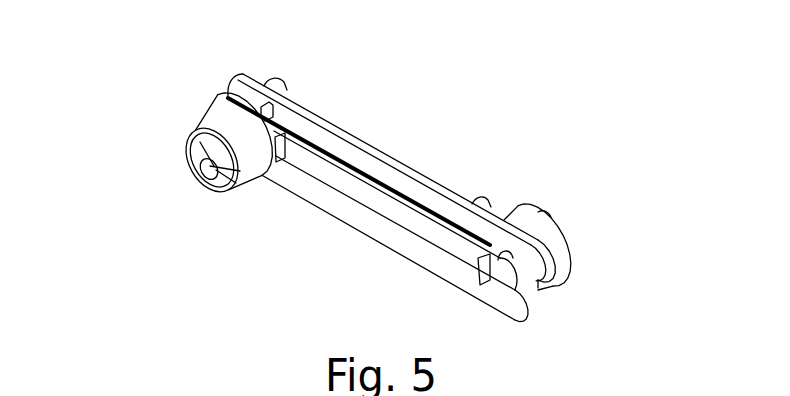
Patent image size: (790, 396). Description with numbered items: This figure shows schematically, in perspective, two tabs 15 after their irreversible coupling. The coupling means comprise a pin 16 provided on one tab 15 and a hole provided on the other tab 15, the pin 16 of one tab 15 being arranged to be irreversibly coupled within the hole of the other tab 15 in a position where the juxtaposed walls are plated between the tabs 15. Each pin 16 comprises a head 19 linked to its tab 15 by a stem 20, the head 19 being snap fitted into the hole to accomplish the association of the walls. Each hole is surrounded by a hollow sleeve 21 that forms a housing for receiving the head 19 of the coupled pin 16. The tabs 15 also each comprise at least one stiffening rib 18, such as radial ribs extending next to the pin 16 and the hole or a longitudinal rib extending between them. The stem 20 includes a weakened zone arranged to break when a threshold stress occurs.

The tab 15 is at (378, 148).
The pin 16 is at (199, 168).
The stiffening rib 18 is at (297, 146).
The head 19 is at (201, 166).
The stem 20 is at (524, 262).
The hollow sleeve 21 is at (192, 139).